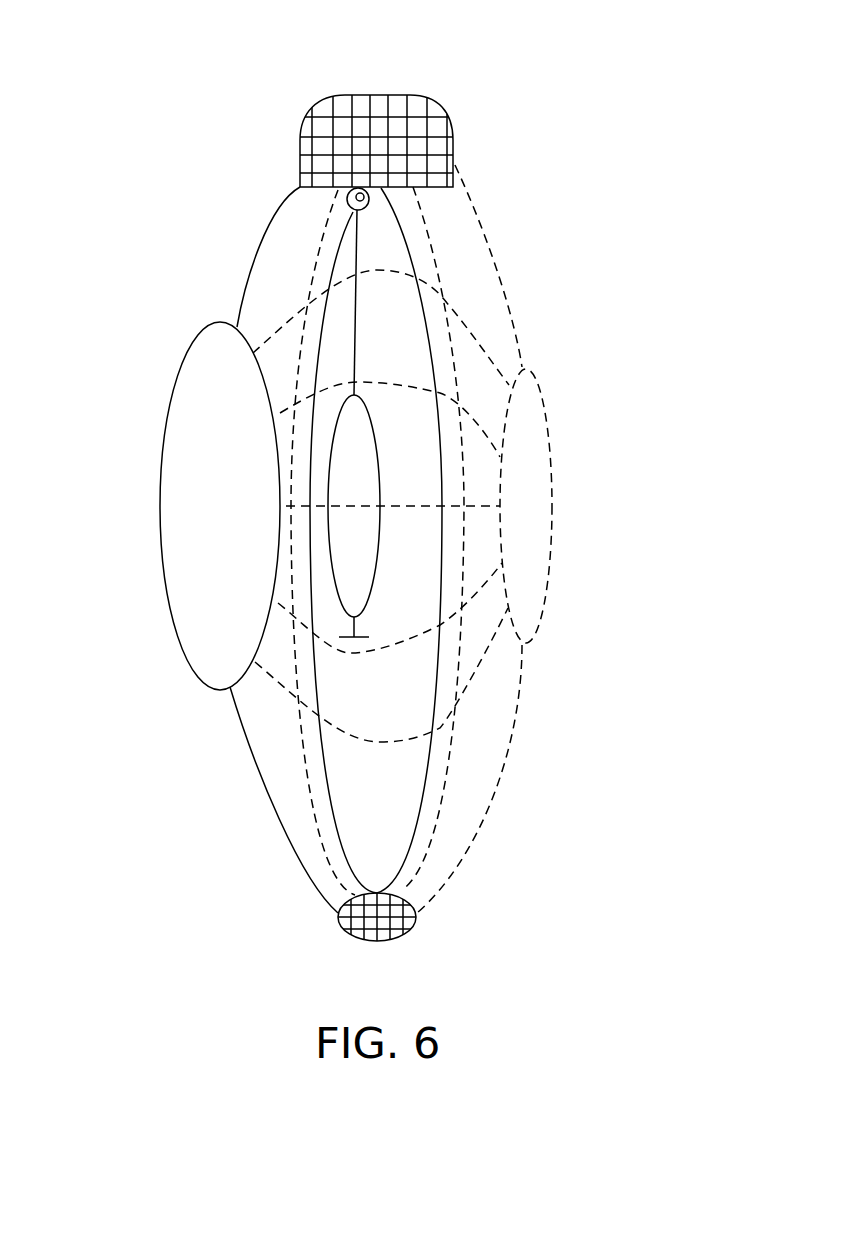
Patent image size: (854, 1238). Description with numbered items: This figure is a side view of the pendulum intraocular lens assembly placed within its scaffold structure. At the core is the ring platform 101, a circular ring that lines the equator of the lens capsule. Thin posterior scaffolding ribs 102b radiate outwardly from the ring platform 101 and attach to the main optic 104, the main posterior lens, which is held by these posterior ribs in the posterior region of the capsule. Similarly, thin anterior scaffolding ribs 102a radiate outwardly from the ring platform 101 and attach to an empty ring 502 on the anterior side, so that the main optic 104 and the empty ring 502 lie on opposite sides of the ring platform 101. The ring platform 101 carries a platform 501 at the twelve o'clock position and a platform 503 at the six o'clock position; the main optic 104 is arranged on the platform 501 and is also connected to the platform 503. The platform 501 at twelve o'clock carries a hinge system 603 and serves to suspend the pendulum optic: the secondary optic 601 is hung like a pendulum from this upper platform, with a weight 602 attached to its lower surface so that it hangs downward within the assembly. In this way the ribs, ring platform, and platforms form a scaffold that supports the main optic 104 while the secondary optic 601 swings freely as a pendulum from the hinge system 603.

The ring platform 101 is at (446, 762).
The anterior scaffolding ribs 102a is at (500, 260).
The posterior scaffolding ribs 102b is at (262, 232).
The main optic 104 is at (160, 506).
The platform at 12 O'clock position 501 is at (455, 140).
The empty ring 502 is at (553, 506).
The platform at 6 O'clock position 503 is at (415, 928).
The secondary optic 601 is at (333, 578).
The weight 602 is at (355, 627).
The hinge system 603 is at (415, 133).